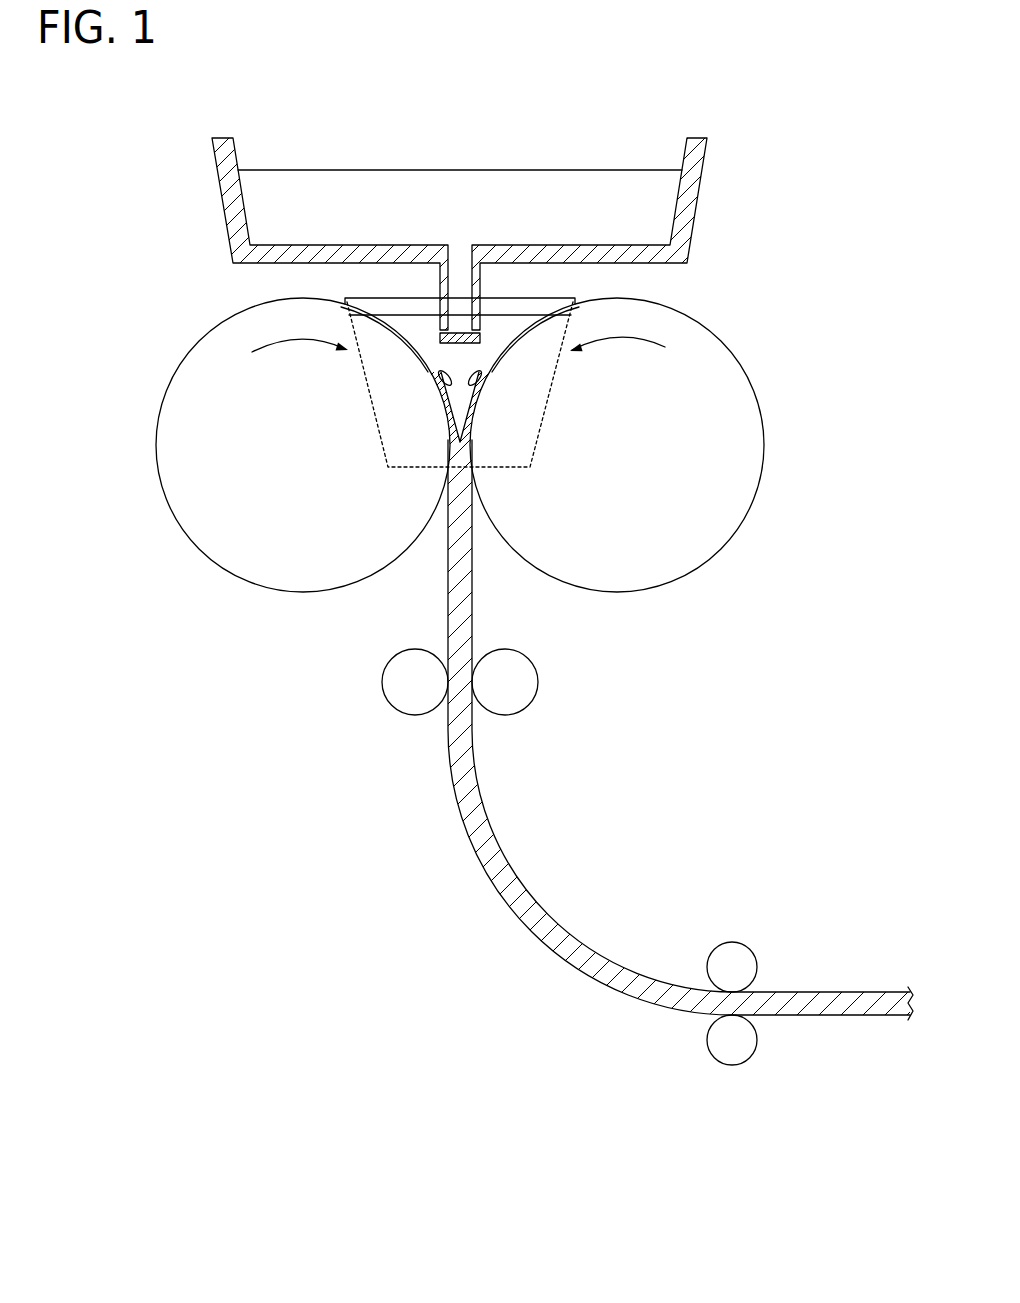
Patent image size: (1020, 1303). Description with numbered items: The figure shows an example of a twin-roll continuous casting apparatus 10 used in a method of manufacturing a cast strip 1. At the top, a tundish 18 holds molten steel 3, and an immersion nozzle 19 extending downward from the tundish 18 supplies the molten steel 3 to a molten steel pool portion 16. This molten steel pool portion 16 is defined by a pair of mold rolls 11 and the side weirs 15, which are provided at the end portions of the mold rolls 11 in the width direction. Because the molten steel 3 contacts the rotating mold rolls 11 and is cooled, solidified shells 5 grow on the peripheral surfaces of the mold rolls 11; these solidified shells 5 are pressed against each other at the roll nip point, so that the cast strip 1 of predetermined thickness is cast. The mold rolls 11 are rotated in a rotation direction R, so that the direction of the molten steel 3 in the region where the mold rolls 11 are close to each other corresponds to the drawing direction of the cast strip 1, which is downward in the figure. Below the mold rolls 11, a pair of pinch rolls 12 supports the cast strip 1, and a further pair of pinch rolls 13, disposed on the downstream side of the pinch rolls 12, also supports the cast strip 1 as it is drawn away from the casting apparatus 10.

The cast strip 1 is at (510, 897).
The molten steel 3 is at (460, 352).
The solidified shells 5 is at (441, 382).
The twin-roll continuous casting apparatus 10 is at (253, 890).
The mold rolls 11 is at (170, 427).
The pinch rolls 12 is at (380, 681).
The pinch rolls 13 is at (732, 948).
The side weirs 15 is at (547, 405).
The molten steel pool portion 16 is at (388, 306).
The tundish 18 is at (693, 182).
The immersion nozzle 19 is at (478, 278).